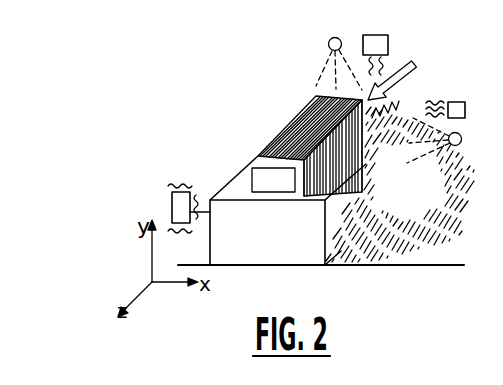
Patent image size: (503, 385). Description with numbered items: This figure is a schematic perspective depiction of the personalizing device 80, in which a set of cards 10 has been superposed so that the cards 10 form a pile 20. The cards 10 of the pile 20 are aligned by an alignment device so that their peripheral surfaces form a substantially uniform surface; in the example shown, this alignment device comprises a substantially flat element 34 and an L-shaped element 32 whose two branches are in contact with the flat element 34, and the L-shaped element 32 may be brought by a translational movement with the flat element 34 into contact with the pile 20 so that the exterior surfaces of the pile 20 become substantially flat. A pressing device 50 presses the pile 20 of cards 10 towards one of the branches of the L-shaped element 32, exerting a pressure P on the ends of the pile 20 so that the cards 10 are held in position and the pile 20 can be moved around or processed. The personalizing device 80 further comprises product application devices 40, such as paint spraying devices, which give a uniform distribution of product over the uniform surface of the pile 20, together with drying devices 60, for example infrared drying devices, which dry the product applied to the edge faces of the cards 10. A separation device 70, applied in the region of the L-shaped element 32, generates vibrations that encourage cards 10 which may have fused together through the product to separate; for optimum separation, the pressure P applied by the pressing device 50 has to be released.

The card 10 is at (288, 127).
The pile 20 is at (358, 188).
The L-shaped element 32 is at (287, 250).
The flat element 34 is at (452, 251).
The product application device 40 is at (328, 44).
The pressing device 50 is at (406, 90).
The drying device 60 is at (388, 43).
The separation device 70 is at (176, 188).
The personalizing device 80 is at (218, 70).
The pressure P is at (395, 77).